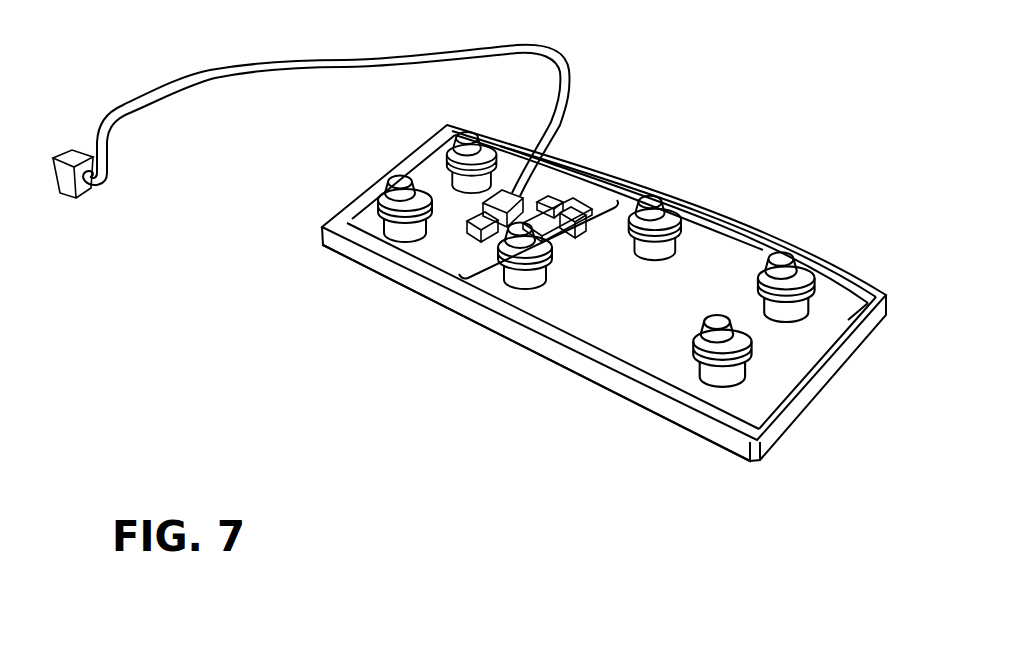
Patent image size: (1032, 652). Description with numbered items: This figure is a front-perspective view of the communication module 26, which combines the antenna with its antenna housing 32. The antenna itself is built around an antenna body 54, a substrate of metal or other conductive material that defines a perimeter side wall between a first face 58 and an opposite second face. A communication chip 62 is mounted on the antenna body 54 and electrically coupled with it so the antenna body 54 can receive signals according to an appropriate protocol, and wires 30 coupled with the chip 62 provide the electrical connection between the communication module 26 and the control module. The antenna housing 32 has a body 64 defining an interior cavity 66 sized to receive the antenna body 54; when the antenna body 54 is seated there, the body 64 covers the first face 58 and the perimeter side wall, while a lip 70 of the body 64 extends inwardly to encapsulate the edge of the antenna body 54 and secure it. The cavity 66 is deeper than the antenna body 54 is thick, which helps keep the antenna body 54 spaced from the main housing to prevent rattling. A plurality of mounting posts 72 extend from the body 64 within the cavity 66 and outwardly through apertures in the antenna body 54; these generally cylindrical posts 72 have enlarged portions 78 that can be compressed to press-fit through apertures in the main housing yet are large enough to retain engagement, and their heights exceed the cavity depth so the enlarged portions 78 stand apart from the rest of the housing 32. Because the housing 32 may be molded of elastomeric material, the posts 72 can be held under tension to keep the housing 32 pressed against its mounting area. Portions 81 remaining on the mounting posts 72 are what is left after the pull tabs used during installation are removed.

The communication module 26 is at (745, 170).
The wires 30 is at (556, 54).
The antenna housing 32 is at (662, 435).
The antenna body 54 is at (711, 258).
The first face 58 is at (634, 327).
The communication chip 62 is at (581, 200).
The body 64 is at (730, 436).
The interior cavity 66 is at (783, 370).
The lip 70 is at (846, 276).
The mounting posts 72 is at (463, 180).
The enlarged portions 78 is at (455, 163).
The portions 81 is at (467, 132).